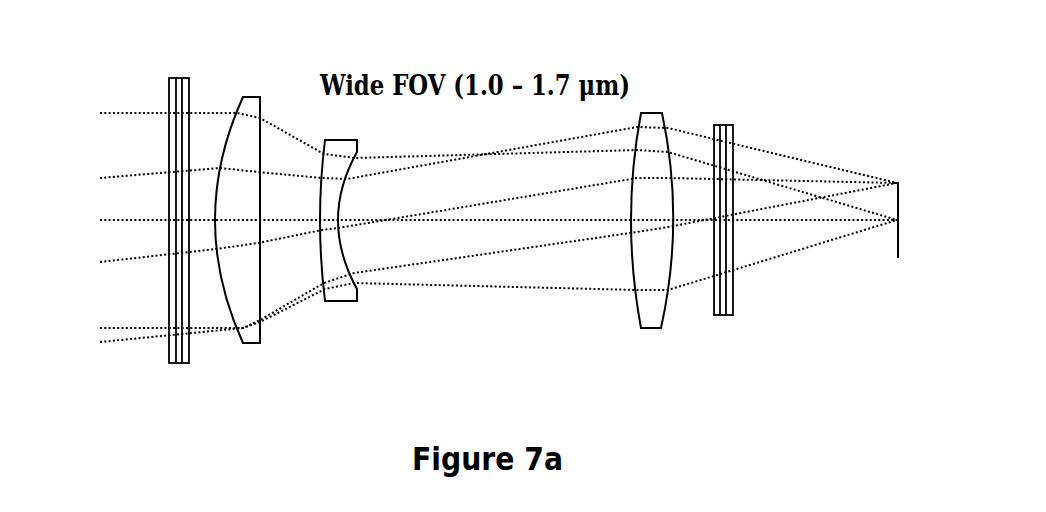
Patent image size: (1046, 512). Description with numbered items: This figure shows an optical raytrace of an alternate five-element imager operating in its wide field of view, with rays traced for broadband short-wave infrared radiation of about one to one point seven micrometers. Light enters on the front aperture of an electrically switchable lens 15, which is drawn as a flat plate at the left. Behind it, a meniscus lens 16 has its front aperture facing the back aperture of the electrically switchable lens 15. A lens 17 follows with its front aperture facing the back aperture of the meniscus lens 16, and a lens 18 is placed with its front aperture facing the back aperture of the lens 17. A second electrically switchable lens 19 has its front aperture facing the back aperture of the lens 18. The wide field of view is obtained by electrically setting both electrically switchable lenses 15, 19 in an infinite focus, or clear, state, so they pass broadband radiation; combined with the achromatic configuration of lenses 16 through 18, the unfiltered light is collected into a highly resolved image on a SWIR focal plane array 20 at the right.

The electrically switchable lens 15 is at (170, 363).
The meniscus lens 16 is at (244, 345).
The lens 17 is at (338, 303).
The lens 18 is at (649, 330).
The electrically switchable lens 19 is at (716, 317).
The SWIR focal plane array 20 is at (898, 260).